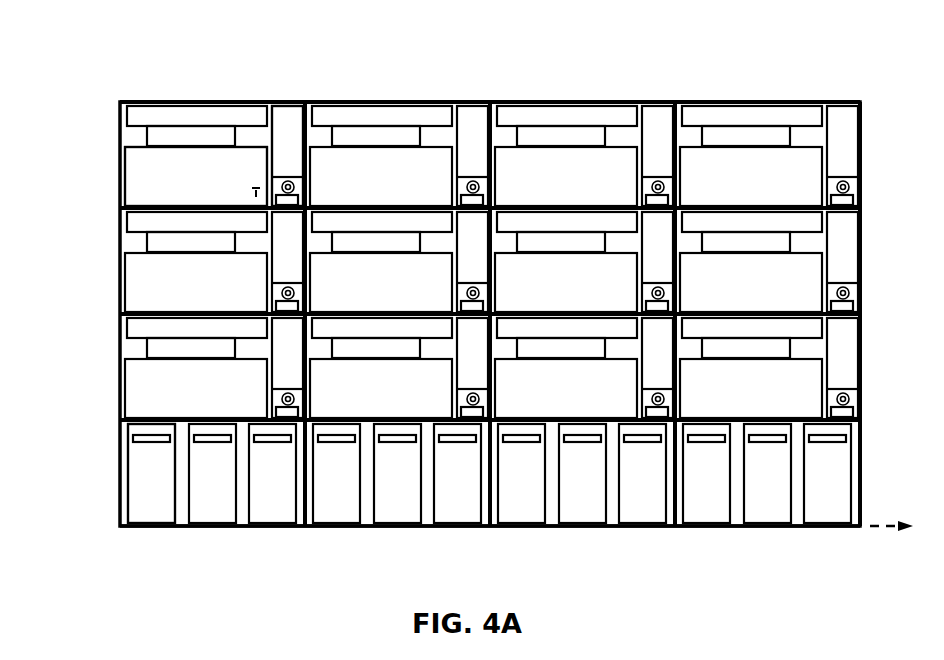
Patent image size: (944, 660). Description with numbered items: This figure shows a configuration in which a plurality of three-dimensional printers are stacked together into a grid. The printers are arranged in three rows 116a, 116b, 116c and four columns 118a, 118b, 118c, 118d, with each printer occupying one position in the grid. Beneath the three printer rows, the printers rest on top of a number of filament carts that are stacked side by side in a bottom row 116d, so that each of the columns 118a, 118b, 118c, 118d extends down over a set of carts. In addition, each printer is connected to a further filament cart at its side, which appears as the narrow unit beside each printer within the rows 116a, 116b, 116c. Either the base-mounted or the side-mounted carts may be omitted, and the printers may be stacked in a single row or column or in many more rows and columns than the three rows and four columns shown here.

The row 116a is at (114, 161).
The row 116b is at (114, 277).
The row 116c is at (114, 381).
The row 116d is at (114, 478).
The column 118a is at (172, 95).
The column 118b is at (405, 95).
The column 118c is at (560, 98).
The column 118d is at (785, 98).